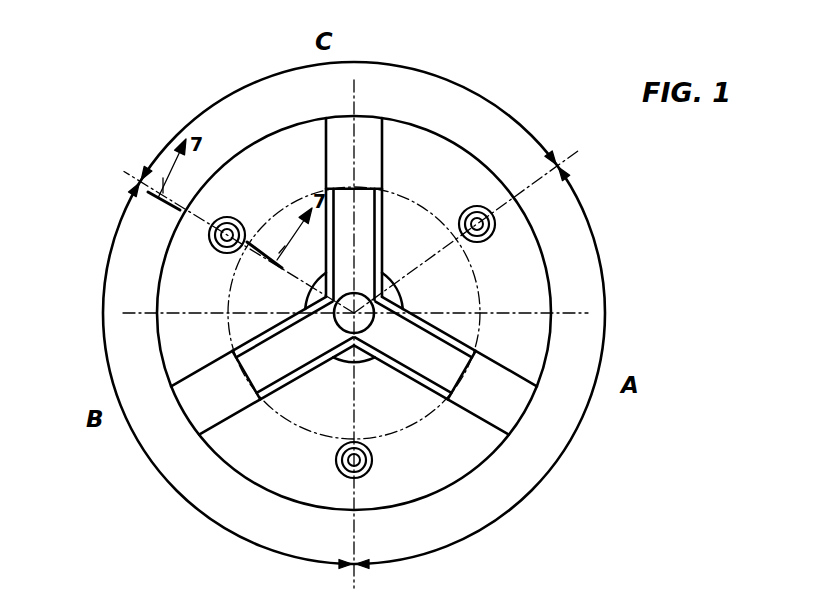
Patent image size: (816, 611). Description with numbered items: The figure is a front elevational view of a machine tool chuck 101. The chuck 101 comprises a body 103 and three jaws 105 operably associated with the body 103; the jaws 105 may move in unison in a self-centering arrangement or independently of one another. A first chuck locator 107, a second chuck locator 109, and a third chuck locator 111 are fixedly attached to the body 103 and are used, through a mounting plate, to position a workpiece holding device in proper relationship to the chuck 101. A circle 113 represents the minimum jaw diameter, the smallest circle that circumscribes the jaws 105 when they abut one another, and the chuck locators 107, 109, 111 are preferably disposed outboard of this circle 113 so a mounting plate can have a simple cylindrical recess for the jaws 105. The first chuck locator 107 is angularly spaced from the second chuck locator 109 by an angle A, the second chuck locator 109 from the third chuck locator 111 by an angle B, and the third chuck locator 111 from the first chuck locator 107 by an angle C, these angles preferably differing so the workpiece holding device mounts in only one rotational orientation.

The machine tool chuck 101 is at (521, 86).
The body 103 is at (457, 463).
The jaws 105 is at (347, 206).
The first chuck locator 107 is at (496, 228).
The second chuck locator 109 is at (372, 460).
The third chuck locator 111 is at (210, 247).
The circle 113 is at (480, 284).